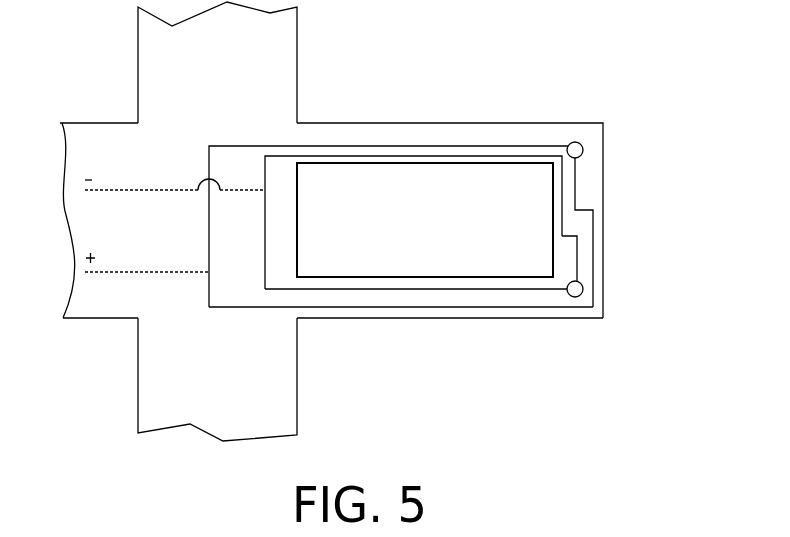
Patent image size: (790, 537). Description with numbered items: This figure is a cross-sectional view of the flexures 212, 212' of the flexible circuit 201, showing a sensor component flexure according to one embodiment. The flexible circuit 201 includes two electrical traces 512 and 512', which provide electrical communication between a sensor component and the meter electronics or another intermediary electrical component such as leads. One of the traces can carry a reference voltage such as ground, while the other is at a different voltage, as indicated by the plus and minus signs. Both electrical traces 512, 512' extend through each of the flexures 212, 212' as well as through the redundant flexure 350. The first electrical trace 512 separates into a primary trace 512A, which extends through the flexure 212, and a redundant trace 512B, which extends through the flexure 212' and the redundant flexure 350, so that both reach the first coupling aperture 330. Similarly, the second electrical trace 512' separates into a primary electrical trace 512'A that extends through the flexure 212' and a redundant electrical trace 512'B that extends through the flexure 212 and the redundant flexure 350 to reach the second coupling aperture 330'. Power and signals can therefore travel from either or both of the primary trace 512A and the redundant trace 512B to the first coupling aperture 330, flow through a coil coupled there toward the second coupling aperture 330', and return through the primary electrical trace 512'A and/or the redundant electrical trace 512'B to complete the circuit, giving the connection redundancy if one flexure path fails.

The flexible circuit 201 is at (105, 127).
The flexure 212 is at (450, 182).
The flexure 212' is at (450, 339).
The first electrical trace 512 is at (147, 296).
The second electrical trace 512' is at (175, 158).
The primary trace 512A is at (343, 146).
The redundant trace 512B is at (340, 307).
The primary electrical trace 512'A is at (416, 329).
The redundant electrical trace 512'B is at (413, 185).
The first coupling aperture 330 is at (588, 112).
The second coupling aperture 330' is at (592, 331).
The redundant flexure 350 is at (595, 188).